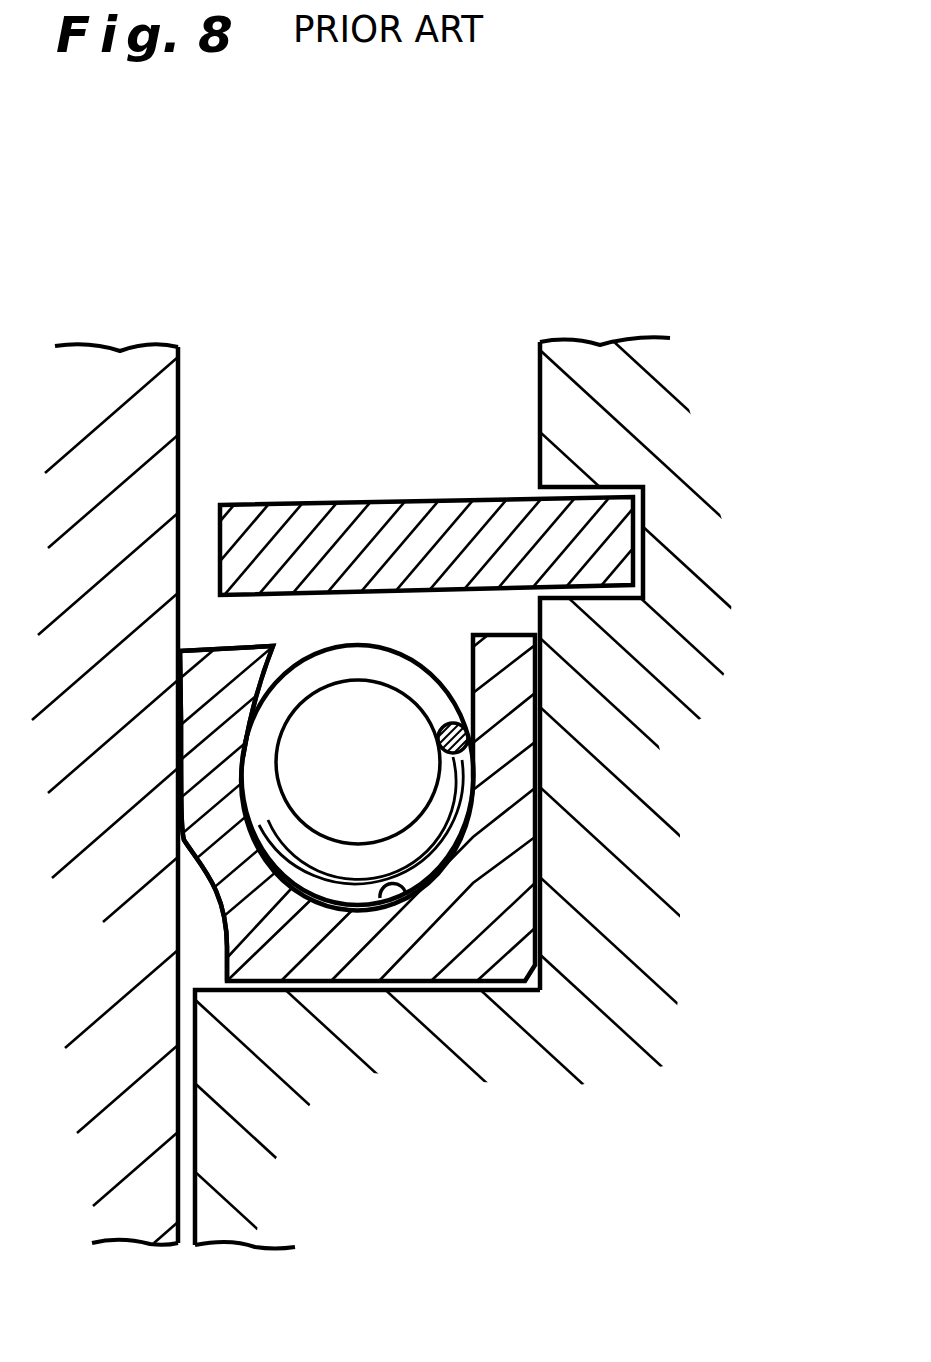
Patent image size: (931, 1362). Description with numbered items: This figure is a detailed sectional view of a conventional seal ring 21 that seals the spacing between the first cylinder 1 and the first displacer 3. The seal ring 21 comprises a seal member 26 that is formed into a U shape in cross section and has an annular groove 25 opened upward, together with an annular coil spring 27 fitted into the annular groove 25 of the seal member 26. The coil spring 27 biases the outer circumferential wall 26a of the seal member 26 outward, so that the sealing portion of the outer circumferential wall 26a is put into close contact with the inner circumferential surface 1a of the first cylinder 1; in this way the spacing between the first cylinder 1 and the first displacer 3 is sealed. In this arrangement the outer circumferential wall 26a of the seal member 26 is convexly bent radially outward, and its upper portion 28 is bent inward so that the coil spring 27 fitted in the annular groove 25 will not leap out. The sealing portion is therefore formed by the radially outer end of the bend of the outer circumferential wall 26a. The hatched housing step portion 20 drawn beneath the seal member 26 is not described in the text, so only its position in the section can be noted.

The first cylinder 1 is at (118, 372).
The inner circumferential surface of the first cylinder 1a is at (179, 392).
The first displacer 3 is at (585, 360).
The housing step portion 20 is at (543, 980).
The seal ring 21 is at (200, 921).
The annular groove 25 is at (378, 898).
The seal member 26 is at (522, 860).
The outer circumferential wall 26a is at (196, 779).
The coil spring 27 is at (458, 762).
The upper portion 28 is at (200, 652).